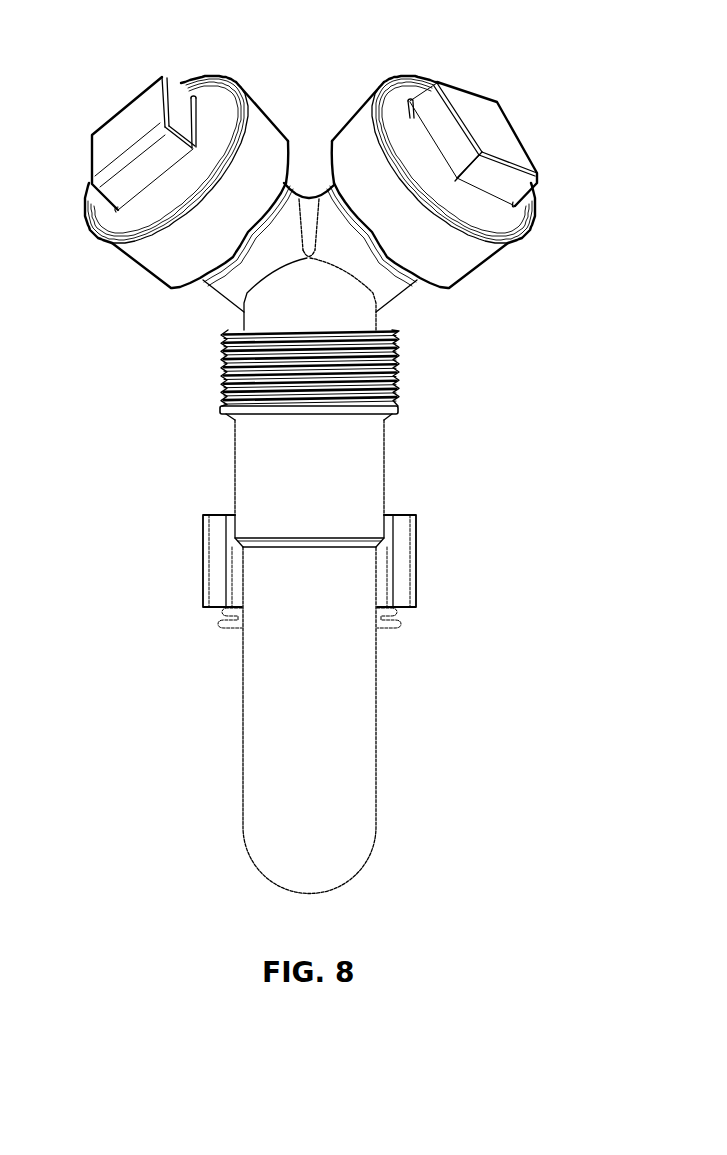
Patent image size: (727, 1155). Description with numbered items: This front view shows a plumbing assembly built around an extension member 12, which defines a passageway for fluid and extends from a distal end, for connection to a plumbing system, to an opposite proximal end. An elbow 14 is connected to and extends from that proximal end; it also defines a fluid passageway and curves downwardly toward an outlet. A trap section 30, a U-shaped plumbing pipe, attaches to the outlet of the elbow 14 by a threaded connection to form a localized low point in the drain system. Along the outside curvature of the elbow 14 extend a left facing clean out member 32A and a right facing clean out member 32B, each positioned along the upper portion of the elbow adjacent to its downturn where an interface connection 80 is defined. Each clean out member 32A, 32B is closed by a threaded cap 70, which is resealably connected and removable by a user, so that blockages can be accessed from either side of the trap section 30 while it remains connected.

The extension member 12 is at (309, 183).
The elbow 14 is at (358, 318).
The trap section 30 is at (373, 707).
The left facing clean out member 32A is at (179, 97).
The right facing clean out member 32B is at (413, 104).
The cap 70 is at (95, 208).
The interface connection 80 is at (240, 299).